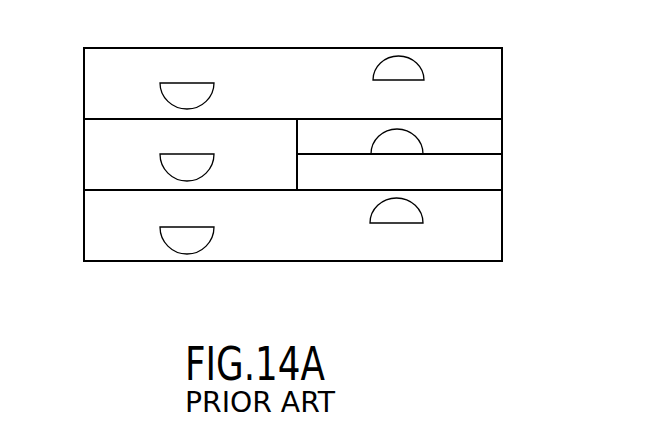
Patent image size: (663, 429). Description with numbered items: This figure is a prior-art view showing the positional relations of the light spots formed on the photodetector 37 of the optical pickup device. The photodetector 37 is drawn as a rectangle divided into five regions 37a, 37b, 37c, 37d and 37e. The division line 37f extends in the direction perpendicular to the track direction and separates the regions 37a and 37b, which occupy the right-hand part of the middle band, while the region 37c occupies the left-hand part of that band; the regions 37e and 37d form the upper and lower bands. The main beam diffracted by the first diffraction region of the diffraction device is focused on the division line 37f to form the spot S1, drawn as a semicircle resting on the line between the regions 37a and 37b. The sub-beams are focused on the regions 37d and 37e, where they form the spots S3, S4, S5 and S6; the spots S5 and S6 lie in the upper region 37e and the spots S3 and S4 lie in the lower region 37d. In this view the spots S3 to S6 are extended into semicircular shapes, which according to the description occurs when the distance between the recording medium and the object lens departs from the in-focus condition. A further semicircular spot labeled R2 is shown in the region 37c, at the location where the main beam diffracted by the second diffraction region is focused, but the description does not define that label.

The photodetector 37 is at (567, 52).
The region 37a is at (498, 138).
The region 37b is at (494, 188).
The region 37c is at (93, 171).
The region 37d is at (100, 231).
The region 37e is at (95, 85).
The division line 37f is at (484, 155).
The spot S1 is at (405, 140).
The spot S3 is at (402, 220).
The spot S4 is at (191, 246).
The spot S5 is at (396, 66).
The spot S6 is at (195, 84).
The reference light receiving element R2 is at (170, 162).